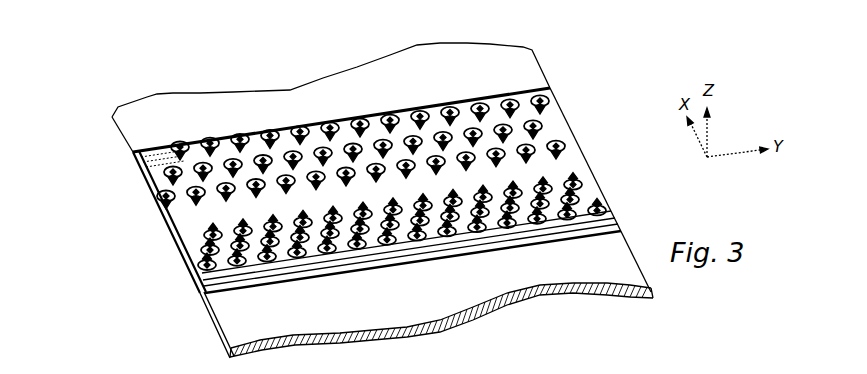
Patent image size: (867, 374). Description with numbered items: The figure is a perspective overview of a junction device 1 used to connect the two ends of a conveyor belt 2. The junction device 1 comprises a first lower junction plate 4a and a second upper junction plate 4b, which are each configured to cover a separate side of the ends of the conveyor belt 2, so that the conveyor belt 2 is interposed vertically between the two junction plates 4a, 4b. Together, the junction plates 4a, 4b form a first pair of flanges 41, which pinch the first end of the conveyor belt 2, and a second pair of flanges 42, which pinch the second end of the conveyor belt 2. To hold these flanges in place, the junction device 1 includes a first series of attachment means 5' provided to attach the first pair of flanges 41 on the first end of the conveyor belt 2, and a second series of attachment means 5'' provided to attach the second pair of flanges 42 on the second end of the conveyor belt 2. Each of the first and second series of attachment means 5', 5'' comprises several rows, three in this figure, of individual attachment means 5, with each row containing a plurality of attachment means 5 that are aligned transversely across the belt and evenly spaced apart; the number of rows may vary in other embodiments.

The junction device 1 is at (101, 90).
The conveyor belt 2 is at (470, 60).
The first pair of flanges 41 is at (141, 168).
The attachment means 5 is at (375, 177).
The first series of attachment means 5' is at (385, 146).
The second series of attachment means 5'' is at (430, 217).
The first lower junction plate 4a is at (180, 262).
The second upper junction plate 4b is at (172, 238).
The second pair of flanges 42 is at (195, 282).